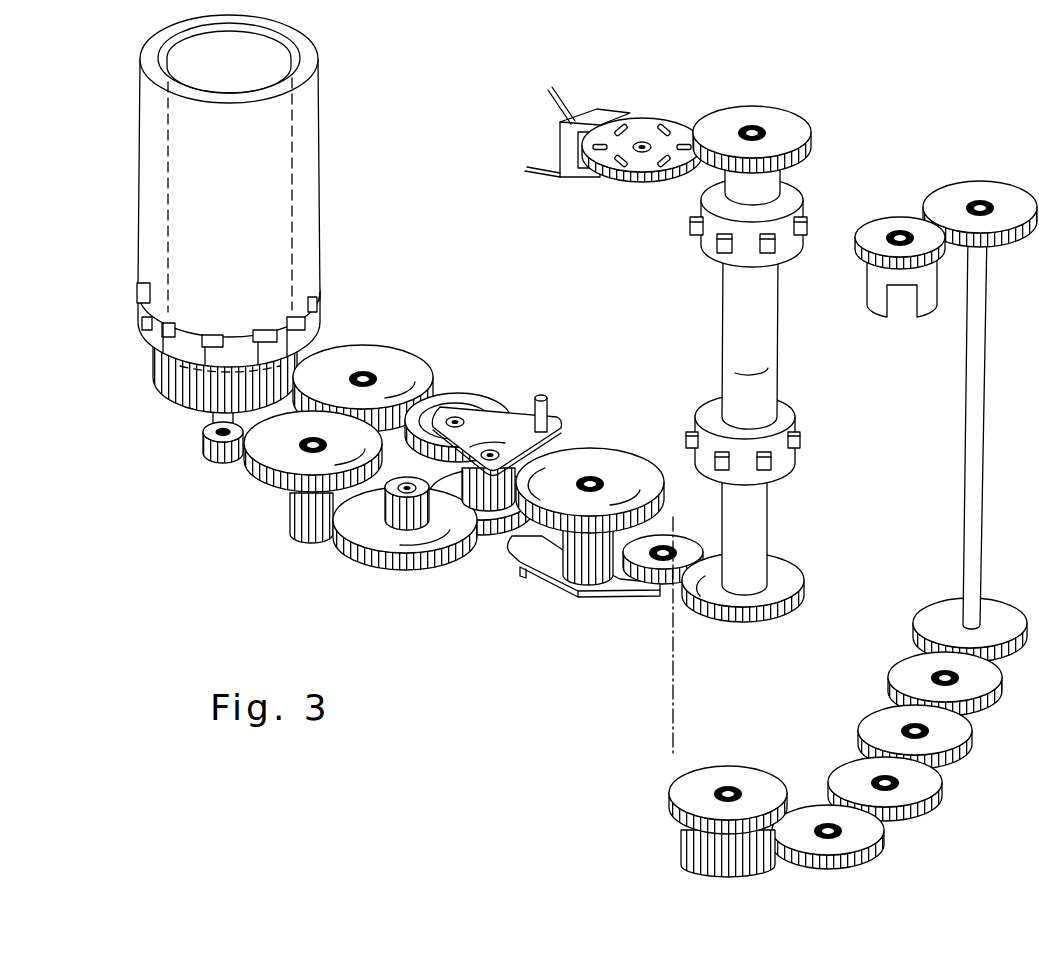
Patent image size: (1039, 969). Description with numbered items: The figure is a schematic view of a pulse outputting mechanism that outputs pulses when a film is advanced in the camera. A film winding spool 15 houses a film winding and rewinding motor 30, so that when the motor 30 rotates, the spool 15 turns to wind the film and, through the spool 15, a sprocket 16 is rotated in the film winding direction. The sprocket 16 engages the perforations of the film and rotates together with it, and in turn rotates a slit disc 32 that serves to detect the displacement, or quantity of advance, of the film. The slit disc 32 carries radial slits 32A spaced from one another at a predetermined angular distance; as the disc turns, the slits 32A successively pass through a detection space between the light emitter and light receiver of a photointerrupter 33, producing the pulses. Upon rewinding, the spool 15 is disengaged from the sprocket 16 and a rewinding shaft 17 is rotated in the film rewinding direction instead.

The film winding spool 15 is at (267, 211).
The film winding and rewinding motor 30 is at (275, 56).
The sprocket 16 is at (768, 350).
The rewinding shaft 17 is at (893, 216).
The slit disc 32 is at (642, 155).
The radial slits 32A is at (660, 168).
The photointerrupter 33 is at (590, 113).